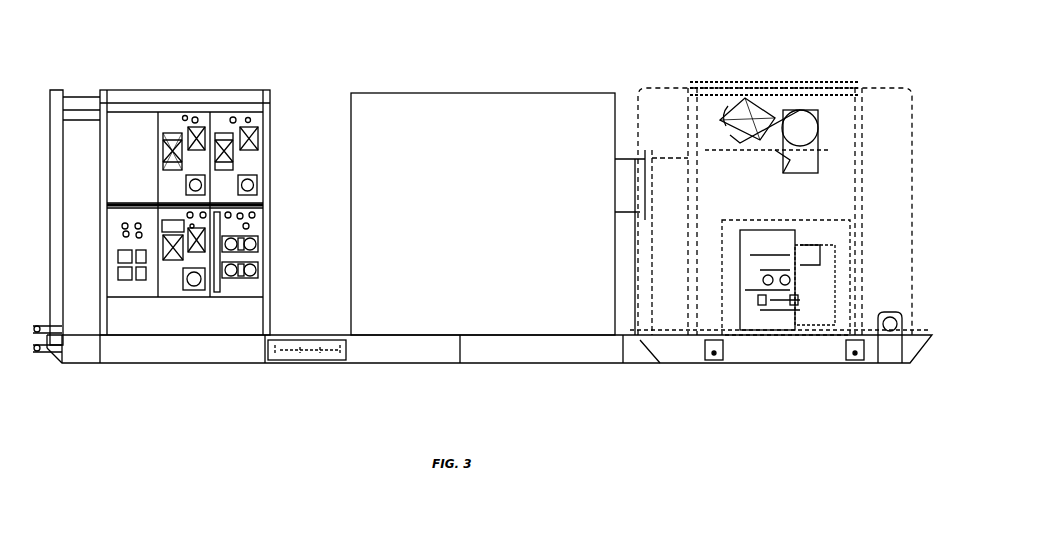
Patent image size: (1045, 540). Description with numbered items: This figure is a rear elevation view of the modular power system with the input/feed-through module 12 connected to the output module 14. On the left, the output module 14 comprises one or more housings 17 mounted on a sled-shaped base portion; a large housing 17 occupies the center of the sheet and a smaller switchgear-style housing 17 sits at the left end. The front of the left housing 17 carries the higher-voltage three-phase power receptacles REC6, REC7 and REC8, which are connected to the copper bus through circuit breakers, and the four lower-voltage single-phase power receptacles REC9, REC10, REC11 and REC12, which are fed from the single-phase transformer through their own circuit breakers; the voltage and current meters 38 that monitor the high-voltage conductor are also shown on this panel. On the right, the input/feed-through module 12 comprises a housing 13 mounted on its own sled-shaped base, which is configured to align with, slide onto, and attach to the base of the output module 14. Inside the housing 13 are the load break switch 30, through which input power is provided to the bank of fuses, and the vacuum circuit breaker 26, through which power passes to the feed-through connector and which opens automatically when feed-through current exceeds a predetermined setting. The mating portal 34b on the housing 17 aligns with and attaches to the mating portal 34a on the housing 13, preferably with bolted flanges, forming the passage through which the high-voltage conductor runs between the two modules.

The input/feed-through module 12 is at (826, 48).
The housing 13 is at (872, 85).
The output module 14 is at (320, 66).
The housing 17 is at (222, 93).
The vacuum circuit breaker 26 is at (762, 238).
The load break switch 30 is at (752, 95).
The mating portal 34a is at (672, 158).
The mating portal 34b is at (628, 157).
The voltage and current meters 38 is at (113, 233).
The power receptacle REC6 is at (195, 177).
The power receptacle REC7 is at (245, 178).
The power receptacle REC8 is at (190, 288).
The power receptacle REC9 is at (274, 292).
The power receptacle REC10 is at (326, 255).
The power receptacle REC11 is at (326, 273).
The power receptacle REC12 is at (326, 291).